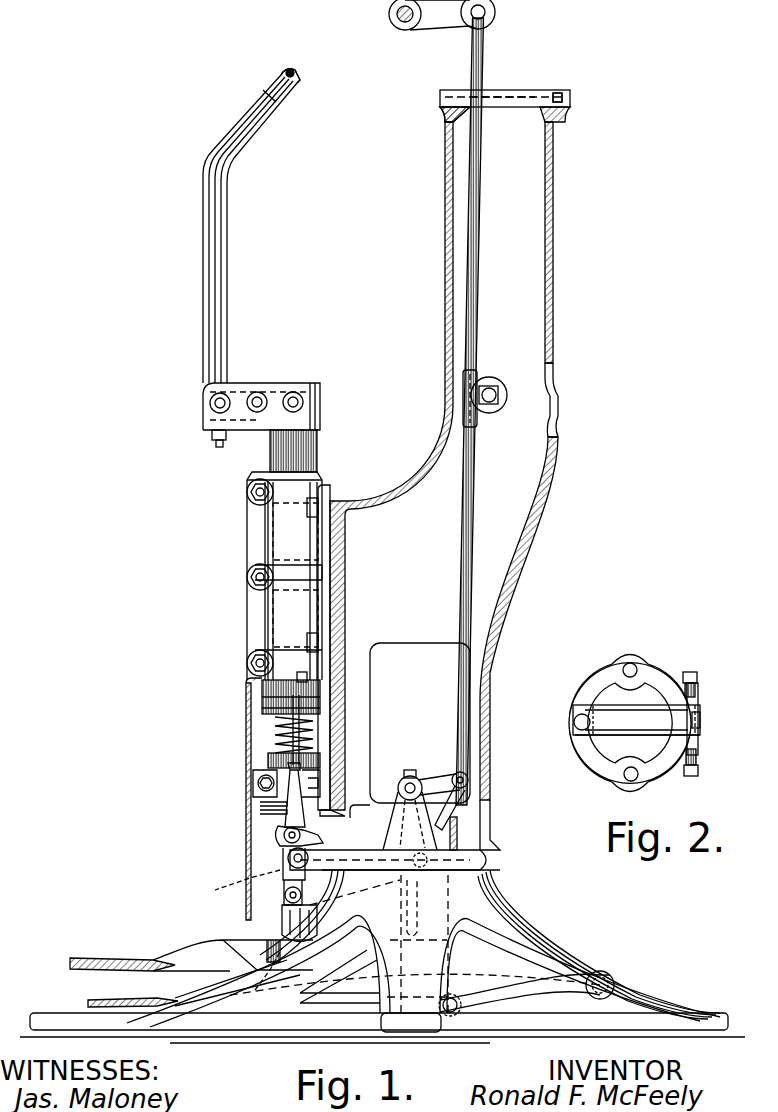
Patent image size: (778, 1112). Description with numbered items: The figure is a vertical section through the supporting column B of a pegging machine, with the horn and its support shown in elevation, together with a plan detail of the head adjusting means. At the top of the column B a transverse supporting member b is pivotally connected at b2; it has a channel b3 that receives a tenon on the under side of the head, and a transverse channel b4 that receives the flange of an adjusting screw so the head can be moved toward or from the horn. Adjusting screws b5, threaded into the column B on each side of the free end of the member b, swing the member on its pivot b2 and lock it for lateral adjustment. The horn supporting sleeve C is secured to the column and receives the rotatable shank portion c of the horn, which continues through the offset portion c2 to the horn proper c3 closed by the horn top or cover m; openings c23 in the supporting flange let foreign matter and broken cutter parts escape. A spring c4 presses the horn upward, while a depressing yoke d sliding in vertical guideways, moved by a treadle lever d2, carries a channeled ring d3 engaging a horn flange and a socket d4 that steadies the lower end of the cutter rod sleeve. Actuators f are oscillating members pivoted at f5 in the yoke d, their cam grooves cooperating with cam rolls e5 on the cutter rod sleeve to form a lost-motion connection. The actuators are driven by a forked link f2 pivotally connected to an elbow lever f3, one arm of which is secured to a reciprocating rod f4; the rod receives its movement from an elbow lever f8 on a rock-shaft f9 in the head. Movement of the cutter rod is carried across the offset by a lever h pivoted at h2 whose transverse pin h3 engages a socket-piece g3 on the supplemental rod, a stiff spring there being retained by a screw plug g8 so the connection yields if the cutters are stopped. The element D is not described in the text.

In FIG. 1, the column B is at (560, 315).
In FIG. 2, the column B is at (590, 678).
In FIG. 1, the transverse supporting member b is at (513, 100).
In FIG. 2, the transverse supporting member b is at (628, 720).
In FIG. 1, the pivotal connection b2 is at (447, 113).
In FIG. 2, the pivotal connection b2 is at (574, 722).
In FIG. 1, the channel b3 is at (527, 93).
In FIG. 2, the channel b3 is at (620, 728).
In FIG. 1, the transverse channel b4 is at (565, 97).
In FIG. 2, the transverse channel b4 is at (700, 722).
In FIG. 2, the adjusting screws b5 is at (697, 675).
In FIG. 1, the rock-shaft f9 is at (388, 14).
In FIG. 1, the elbow lever f8 is at (450, 25).
In FIG. 1, the reciprocating rod f4 is at (470, 545).
In FIG. 1, the elbow lever f3 is at (437, 780).
In FIG. 1, the link f2 is at (388, 880).
In FIG. 1, the actuators f is at (280, 843).
In FIG. 1, the pivot f5 is at (284, 895).
In FIG. 1, the horn top or cover m is at (252, 213).
In FIG. 1, the openings c23 is at (298, 76).
In FIG. 1, the horn proper c3 is at (270, 98).
In FIG. 1, the offset portion c2 is at (257, 392).
In FIG. 1, the shank portion c is at (312, 460).
In FIG. 1, the spring c4 is at (273, 732).
In FIG. 1, the horn supporting sleeve C is at (250, 548).
In FIG. 1, the lever h is at (300, 404).
In FIG. 1, the pivot h2 is at (293, 392).
In FIG. 1, the transverse pin h3 is at (210, 403).
In FIG. 1, the socket-piece g3 is at (212, 435).
In FIG. 1, the screw plug g8 is at (218, 447).
In FIG. 1, the yoke or frame d is at (282, 808).
In FIG. 1, the treadle lever d2 is at (157, 960).
In FIG. 1, the channeled ring d3 is at (262, 690).
In FIG. 1, the socket d4 is at (282, 920).
In FIG. 1, the plate D is at (268, 760).
In FIG. 1, the cam rolls e5 is at (256, 869).